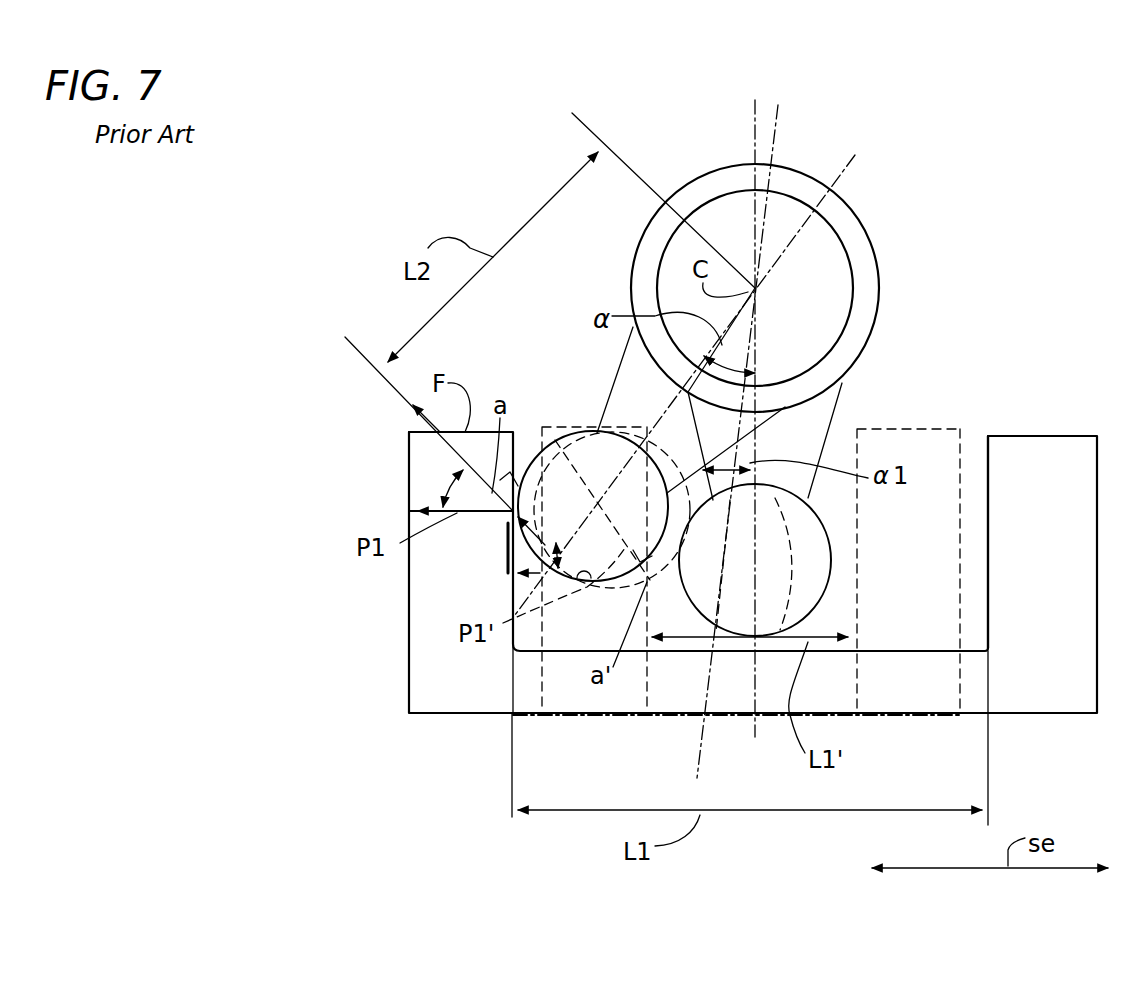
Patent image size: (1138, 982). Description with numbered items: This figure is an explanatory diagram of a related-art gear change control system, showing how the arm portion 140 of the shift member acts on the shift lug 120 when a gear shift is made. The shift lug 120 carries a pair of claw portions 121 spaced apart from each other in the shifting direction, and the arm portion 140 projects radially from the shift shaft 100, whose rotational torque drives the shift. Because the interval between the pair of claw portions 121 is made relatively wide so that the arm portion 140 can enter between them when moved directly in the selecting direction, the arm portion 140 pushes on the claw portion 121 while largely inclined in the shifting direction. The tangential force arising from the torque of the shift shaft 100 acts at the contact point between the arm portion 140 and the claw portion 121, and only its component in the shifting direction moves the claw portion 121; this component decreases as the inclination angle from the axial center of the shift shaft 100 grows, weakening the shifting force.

The shift shaft 100 is at (820, 316).
The arm portion 140 is at (830, 418).
The shift lug 120 is at (1000, 690).
The claw portion 121 is at (1045, 507).